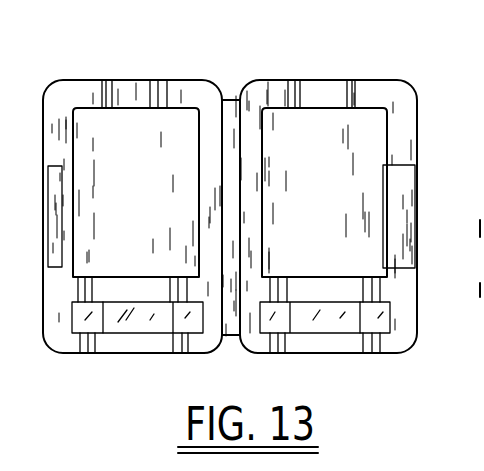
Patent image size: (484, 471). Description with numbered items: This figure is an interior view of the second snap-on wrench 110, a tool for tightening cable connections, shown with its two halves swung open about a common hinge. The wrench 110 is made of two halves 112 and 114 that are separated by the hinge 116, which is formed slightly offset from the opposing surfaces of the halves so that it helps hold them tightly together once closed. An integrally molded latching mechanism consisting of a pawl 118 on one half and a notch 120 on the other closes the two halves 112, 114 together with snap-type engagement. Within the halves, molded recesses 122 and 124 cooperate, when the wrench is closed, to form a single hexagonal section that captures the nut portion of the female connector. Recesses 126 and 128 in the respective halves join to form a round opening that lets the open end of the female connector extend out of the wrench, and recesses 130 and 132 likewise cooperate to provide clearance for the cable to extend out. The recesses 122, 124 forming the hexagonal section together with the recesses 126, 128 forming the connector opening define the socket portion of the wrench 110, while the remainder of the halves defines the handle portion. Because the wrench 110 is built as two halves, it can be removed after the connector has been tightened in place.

The wrench 110 is at (104, 44).
The half 112 is at (405, 106).
The half 114 is at (62, 145).
The hinge 116 is at (228, 132).
The pawl 118 is at (53, 213).
The notch 120 is at (408, 220).
The molded recess 122 is at (383, 320).
The molded recess 124 is at (78, 315).
The recess 126 is at (277, 345).
The recess 128 is at (182, 345).
The recess 130 is at (352, 100).
The recess 132 is at (103, 100).